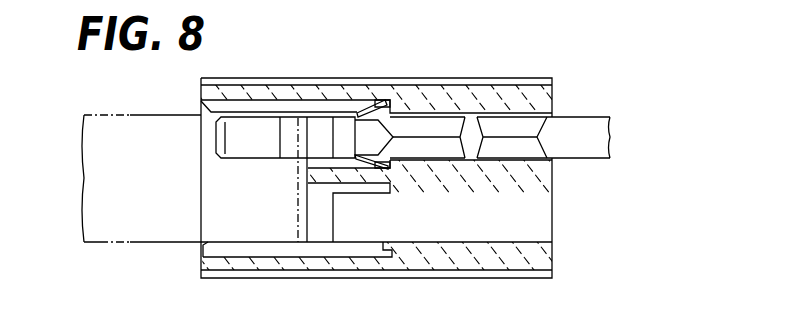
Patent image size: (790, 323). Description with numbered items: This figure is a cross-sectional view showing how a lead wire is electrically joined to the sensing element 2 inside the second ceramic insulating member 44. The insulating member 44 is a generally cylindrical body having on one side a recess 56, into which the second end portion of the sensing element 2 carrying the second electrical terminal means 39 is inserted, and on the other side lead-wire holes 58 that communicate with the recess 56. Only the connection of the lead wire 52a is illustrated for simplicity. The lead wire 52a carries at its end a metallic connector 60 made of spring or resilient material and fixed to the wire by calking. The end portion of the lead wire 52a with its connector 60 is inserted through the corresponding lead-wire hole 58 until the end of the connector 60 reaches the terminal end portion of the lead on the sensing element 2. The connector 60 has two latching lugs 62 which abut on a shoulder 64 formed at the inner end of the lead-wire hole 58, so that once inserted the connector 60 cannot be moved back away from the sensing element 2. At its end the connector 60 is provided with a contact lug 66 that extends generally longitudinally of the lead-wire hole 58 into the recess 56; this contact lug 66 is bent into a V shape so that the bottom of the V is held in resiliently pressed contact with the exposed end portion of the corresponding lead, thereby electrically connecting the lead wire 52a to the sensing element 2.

The sensing element 2 is at (155, 250).
The second electrical terminal means 39 is at (270, 187).
The second ceramic insulating member 44 is at (462, 66).
The lead wire 52a is at (580, 148).
The recess 56 is at (254, 241).
The lead-wire hole 58 is at (540, 127).
The metallic connector 60 is at (461, 100).
The latching lug 62 is at (378, 104).
The shoulder 64 is at (384, 99).
The contact lug 66 is at (260, 126).